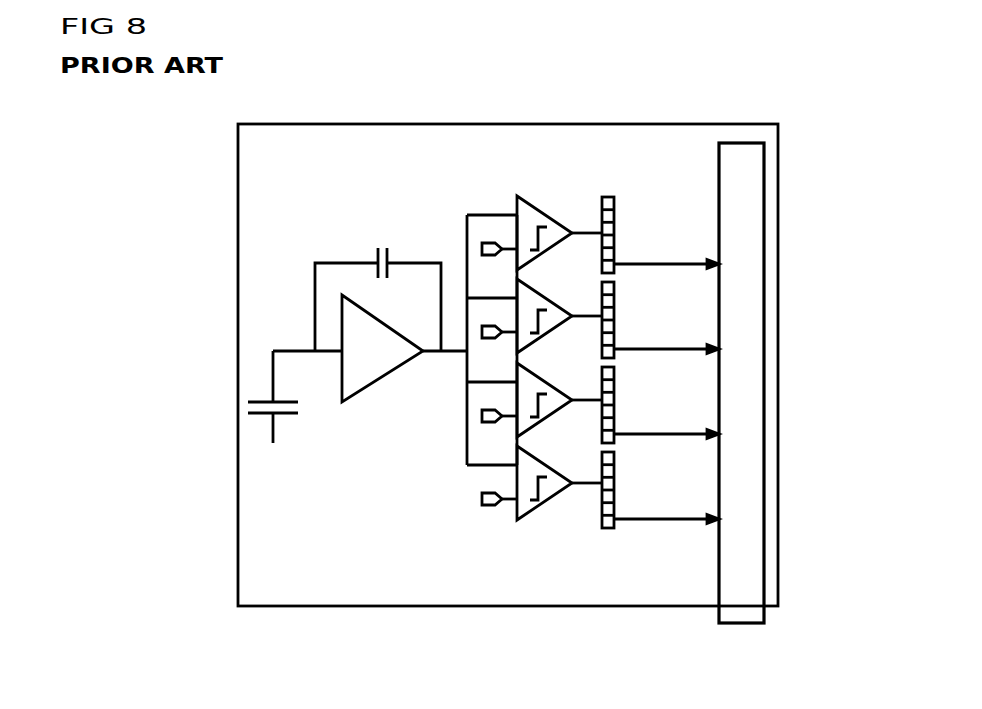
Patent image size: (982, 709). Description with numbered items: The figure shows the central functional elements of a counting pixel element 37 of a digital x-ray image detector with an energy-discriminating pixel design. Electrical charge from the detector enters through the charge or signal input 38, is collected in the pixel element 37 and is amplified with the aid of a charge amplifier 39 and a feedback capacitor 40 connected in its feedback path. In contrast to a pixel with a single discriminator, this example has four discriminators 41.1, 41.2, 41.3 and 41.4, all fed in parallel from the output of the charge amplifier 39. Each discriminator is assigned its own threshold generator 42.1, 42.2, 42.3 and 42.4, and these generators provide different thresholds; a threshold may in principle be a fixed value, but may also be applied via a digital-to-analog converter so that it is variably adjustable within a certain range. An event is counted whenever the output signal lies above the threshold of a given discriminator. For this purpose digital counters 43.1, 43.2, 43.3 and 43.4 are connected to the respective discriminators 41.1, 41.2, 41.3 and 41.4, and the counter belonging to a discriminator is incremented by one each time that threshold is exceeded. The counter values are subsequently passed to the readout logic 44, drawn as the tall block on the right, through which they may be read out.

The counting pixel element 37 is at (227, 254).
The charge or signal input 38 is at (268, 430).
The charge amplifier 39 is at (348, 330).
The feedback capacitor 40 is at (377, 248).
The discriminator 41.1 is at (549, 218).
The discriminator 41.2 is at (552, 303).
The discriminator 41.3 is at (552, 386).
The discriminator 41.4 is at (545, 487).
The threshold generator 42.1 is at (478, 247).
The threshold generator 42.2 is at (478, 330).
The threshold generator 42.3 is at (478, 417).
The threshold generator 42.4 is at (486, 497).
The digital counter 43.1 is at (616, 228).
The digital counter 43.2 is at (616, 313).
The digital counter 43.3 is at (616, 398).
The digital counter 43.4 is at (616, 483).
The readout logic 44 is at (742, 338).